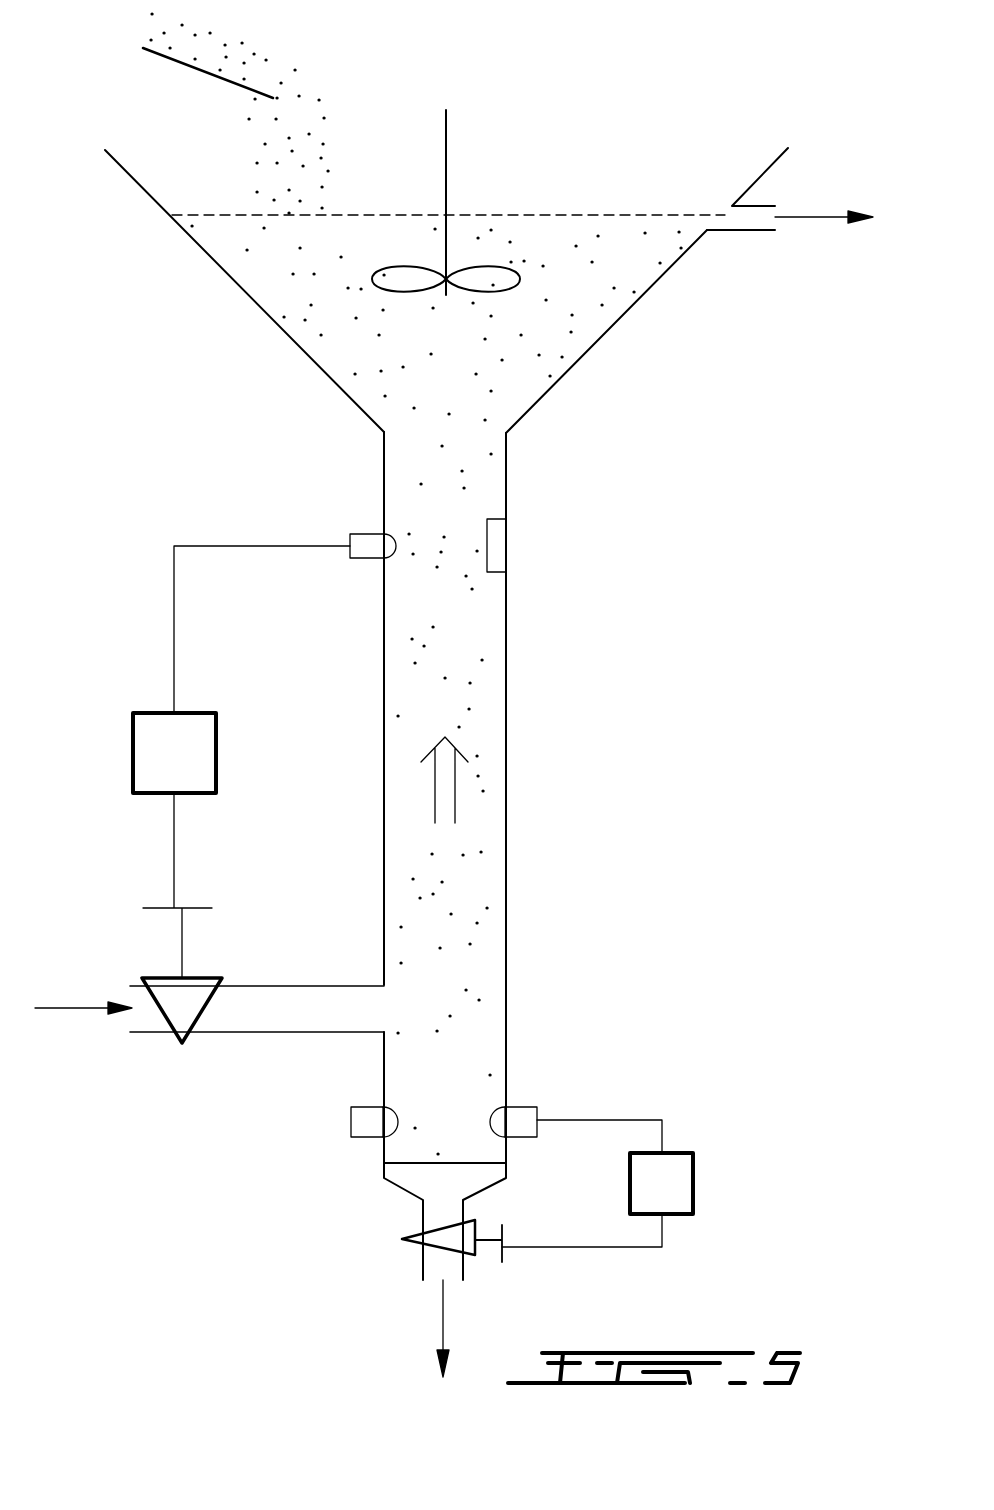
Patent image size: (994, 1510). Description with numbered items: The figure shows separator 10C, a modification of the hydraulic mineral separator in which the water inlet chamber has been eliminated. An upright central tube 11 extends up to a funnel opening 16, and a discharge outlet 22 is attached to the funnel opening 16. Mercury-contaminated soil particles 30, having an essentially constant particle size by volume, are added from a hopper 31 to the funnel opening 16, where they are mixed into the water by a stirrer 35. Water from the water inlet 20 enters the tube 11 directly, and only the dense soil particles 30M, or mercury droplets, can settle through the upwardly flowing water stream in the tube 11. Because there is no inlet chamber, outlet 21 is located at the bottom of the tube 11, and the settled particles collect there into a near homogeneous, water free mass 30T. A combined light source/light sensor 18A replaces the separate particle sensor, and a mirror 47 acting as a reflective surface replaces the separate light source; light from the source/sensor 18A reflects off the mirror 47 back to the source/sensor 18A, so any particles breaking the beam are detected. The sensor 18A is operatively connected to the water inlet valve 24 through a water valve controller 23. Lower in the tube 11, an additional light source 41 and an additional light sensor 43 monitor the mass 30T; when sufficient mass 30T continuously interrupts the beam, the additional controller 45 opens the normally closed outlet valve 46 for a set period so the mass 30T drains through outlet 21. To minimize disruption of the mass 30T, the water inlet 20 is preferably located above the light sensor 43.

The separator 10C is at (697, 590).
The upright central tube 11 is at (506, 695).
The funnel opening 16 is at (566, 372).
The combined light source/light sensor 18A is at (368, 540).
The water inlet 20 is at (294, 985).
The discharge outlet 21 is at (420, 1257).
The discharge outlet 22 is at (735, 230).
The water valve controller 23 is at (193, 740).
The water inlet valve 24 is at (180, 1043).
The mercury-contaminated soil particles 30 is at (318, 123).
The dense soil particles 30M is at (452, 1025).
The water free mass 30T is at (456, 1193).
The hopper 31 is at (228, 80).
The stirrer 35 is at (446, 177).
The additional light source 41 is at (363, 1122).
The additional light sensor 43 is at (523, 1112).
The additional controller 45 is at (676, 1183).
The outlet valve 46 is at (470, 1255).
The mirror 47 is at (499, 547).